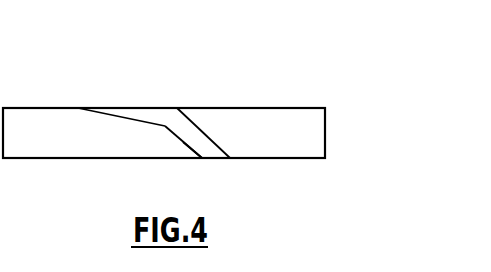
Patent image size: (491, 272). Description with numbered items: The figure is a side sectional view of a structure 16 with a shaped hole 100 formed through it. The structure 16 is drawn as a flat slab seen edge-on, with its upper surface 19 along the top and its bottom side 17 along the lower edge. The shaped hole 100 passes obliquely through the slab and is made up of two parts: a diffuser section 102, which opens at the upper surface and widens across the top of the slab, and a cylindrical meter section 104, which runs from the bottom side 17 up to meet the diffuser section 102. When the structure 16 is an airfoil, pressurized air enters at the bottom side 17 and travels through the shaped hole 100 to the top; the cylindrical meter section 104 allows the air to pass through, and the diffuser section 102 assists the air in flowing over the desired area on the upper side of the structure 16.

The structure 16 is at (293, 107).
The bottom side 17 is at (270, 158).
The outer surface 19 is at (247, 108).
The shaped hole 100 is at (172, 117).
The diffuser section 102 is at (106, 113).
The cylindrical meter section 104 is at (193, 145).